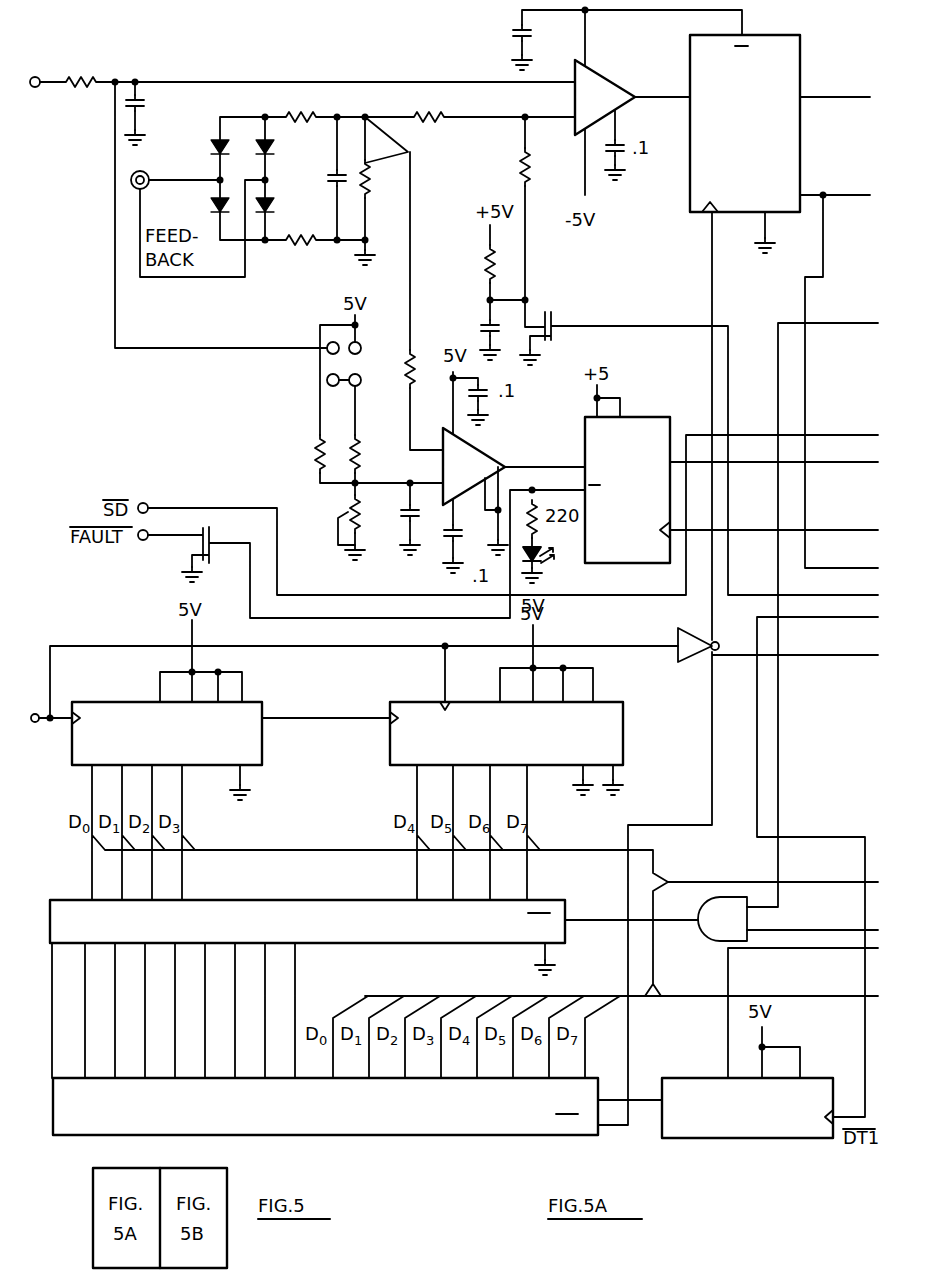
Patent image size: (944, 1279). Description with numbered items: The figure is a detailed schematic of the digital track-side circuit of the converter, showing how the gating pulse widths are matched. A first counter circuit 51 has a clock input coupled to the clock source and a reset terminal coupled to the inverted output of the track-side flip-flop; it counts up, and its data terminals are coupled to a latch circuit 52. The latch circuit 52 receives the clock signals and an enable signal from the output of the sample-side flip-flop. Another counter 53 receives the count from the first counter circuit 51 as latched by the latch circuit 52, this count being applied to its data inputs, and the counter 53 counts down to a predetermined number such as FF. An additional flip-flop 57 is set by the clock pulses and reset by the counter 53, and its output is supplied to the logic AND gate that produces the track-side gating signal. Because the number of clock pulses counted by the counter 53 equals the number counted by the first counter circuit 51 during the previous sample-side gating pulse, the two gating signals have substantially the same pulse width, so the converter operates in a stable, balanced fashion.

The first counter circuit 51 is at (195, 765).
The latch circuit 52 is at (318, 943).
The counter 53 is at (305, 1138).
The additional flip flop 57 is at (815, 1078).